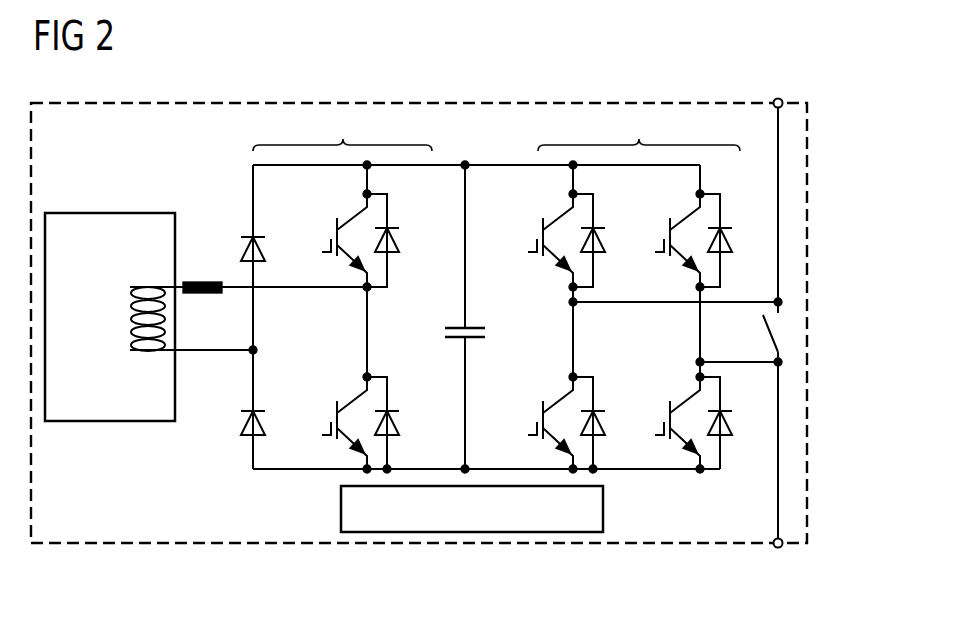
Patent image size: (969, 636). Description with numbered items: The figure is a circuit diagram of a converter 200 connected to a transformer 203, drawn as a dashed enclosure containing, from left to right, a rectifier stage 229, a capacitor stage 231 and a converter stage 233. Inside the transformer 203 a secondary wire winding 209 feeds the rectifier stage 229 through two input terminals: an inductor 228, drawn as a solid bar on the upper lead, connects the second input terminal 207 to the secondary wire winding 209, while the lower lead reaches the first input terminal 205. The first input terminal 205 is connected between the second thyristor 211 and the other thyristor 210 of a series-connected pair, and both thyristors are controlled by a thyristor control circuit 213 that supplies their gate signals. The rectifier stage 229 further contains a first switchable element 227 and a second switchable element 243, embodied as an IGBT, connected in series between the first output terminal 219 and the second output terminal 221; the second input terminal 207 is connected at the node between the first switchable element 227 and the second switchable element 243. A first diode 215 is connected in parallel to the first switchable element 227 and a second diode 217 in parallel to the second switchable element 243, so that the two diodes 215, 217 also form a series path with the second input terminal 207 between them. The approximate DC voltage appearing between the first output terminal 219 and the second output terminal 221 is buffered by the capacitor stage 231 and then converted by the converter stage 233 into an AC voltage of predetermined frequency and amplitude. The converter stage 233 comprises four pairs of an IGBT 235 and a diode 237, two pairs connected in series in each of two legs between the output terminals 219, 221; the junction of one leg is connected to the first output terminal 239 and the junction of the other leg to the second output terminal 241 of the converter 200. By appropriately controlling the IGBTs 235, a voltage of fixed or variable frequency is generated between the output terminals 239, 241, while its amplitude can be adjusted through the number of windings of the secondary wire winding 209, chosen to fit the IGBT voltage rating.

The converter 200 is at (680, 86).
The transformer 203 is at (106, 212).
The first input terminal 205 is at (250, 354).
The second input terminal 207 is at (365, 291).
The secondary wire winding 209 is at (130, 322).
The diode 210 is at (249, 442).
The second thyristor 211 is at (260, 238).
The thyristor control circuit 213 is at (605, 508).
The first diode 215 is at (394, 414).
The second diode 217 is at (394, 229).
The first output terminal 219 is at (506, 467).
The second output terminal 221 is at (455, 163).
The first switchable element 227 is at (323, 424).
The inductor 228 is at (204, 281).
The rectifier stage 229 is at (342, 130).
The capacitor stage 231 is at (471, 326).
The converter stage 233 is at (639, 130).
The IGBT 235 is at (530, 238).
The diode 237 is at (600, 229).
The first output terminal of the converter 239 is at (779, 548).
The second output terminal of the converter 241 is at (779, 97).
The second switchable element 243 is at (323, 238).